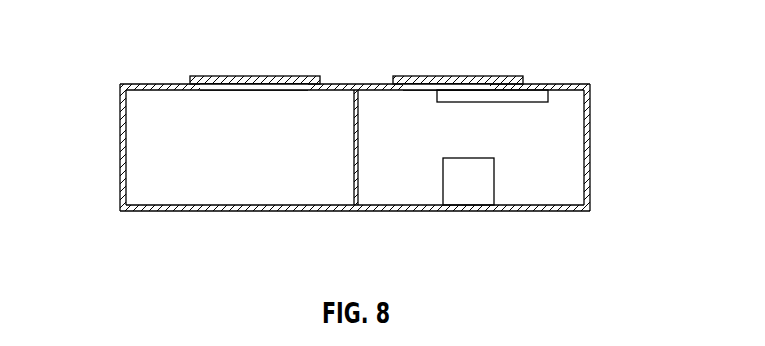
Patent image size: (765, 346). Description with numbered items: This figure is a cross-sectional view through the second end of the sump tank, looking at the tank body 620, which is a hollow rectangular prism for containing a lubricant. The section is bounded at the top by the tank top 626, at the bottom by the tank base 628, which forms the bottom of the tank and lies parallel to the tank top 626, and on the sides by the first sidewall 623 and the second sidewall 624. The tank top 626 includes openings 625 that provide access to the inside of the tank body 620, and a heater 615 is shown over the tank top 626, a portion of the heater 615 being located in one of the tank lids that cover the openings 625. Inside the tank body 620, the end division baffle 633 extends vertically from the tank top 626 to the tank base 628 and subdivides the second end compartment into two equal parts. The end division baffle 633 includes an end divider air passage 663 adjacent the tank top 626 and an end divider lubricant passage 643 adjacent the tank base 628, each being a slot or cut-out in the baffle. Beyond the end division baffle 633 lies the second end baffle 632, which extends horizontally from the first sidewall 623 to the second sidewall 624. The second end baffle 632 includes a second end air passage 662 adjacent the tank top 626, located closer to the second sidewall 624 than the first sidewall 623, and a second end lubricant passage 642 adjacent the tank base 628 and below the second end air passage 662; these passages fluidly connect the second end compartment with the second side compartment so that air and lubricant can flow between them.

The heater 615 is at (247, 76).
The tank body 620 is at (353, 149).
The first sidewall 623 is at (119, 154).
The second sidewall 624 is at (589, 149).
The openings 625 is at (227, 91).
The tank top 626 is at (155, 84).
The tank base 628 is at (186, 212).
The second end baffle 632 is at (542, 187).
The end division baffle 633 is at (392, 147).
The second end lubricant passage 642 is at (470, 185).
The end divider lubricant passage 643 is at (359, 192).
The second end air passage 662 is at (524, 96).
The end divider air passage 663 is at (392, 147).